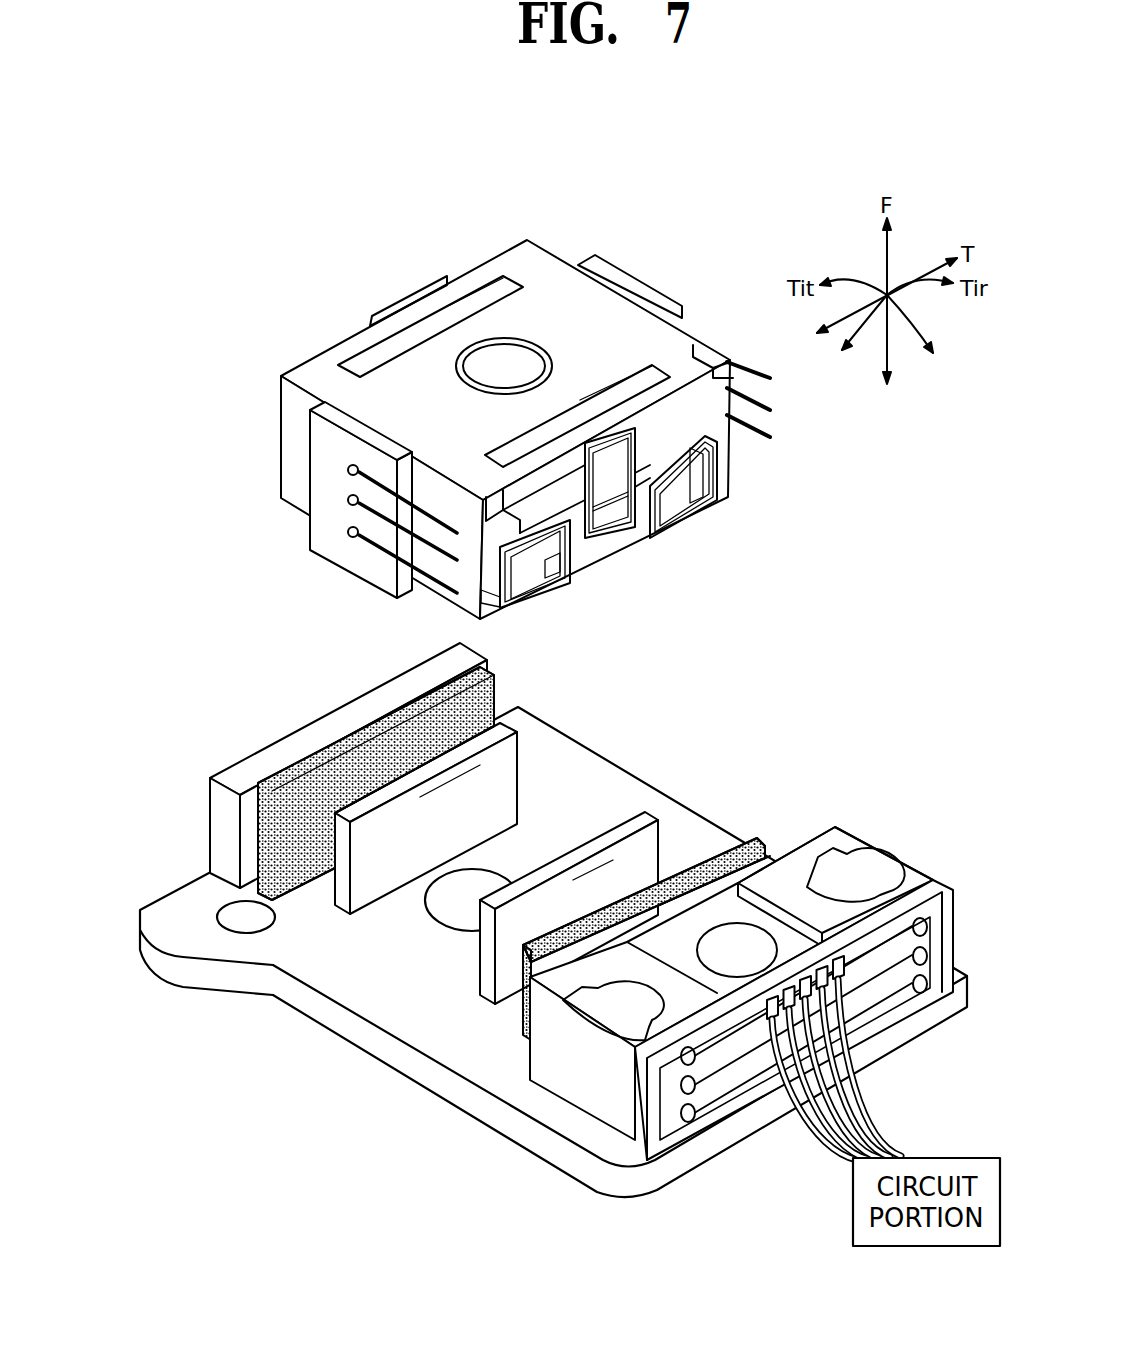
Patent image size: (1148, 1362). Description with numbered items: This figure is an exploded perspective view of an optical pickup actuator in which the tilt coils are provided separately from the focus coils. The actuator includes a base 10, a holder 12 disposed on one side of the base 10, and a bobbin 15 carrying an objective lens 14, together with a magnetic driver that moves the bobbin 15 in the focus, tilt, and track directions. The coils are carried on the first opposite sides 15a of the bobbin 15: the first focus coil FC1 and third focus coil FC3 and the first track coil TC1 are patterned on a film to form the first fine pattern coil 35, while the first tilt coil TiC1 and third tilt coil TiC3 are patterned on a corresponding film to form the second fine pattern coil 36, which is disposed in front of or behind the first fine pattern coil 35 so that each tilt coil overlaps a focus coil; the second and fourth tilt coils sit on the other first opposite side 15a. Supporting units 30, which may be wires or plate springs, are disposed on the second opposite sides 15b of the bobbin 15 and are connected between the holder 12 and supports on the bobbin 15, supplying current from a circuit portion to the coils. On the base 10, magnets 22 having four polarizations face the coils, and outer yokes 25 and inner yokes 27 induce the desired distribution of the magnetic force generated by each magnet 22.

The base 10 is at (357, 1035).
The holder 12 is at (577, 1087).
The objective lens 14 is at (503, 350).
The bobbin 15 is at (547, 270).
The first opposite sides 15a is at (693, 352).
The second opposite sides 15b is at (288, 461).
The magnet 22 is at (347, 747).
The outer yoke 25 is at (285, 750).
The inner yoke 27 is at (517, 745).
The supporting unit 30 is at (430, 592).
The first fine pattern coil 35 is at (412, 298).
The second fine pattern coil 36 is at (613, 557).
The first track coil TC1 is at (636, 502).
The first tilt coil TiC1 is at (571, 572).
The third tilt coil TiC3 is at (712, 500).
The first focus coil FC1 is at (553, 570).
The third focus coil FC3 is at (702, 510).